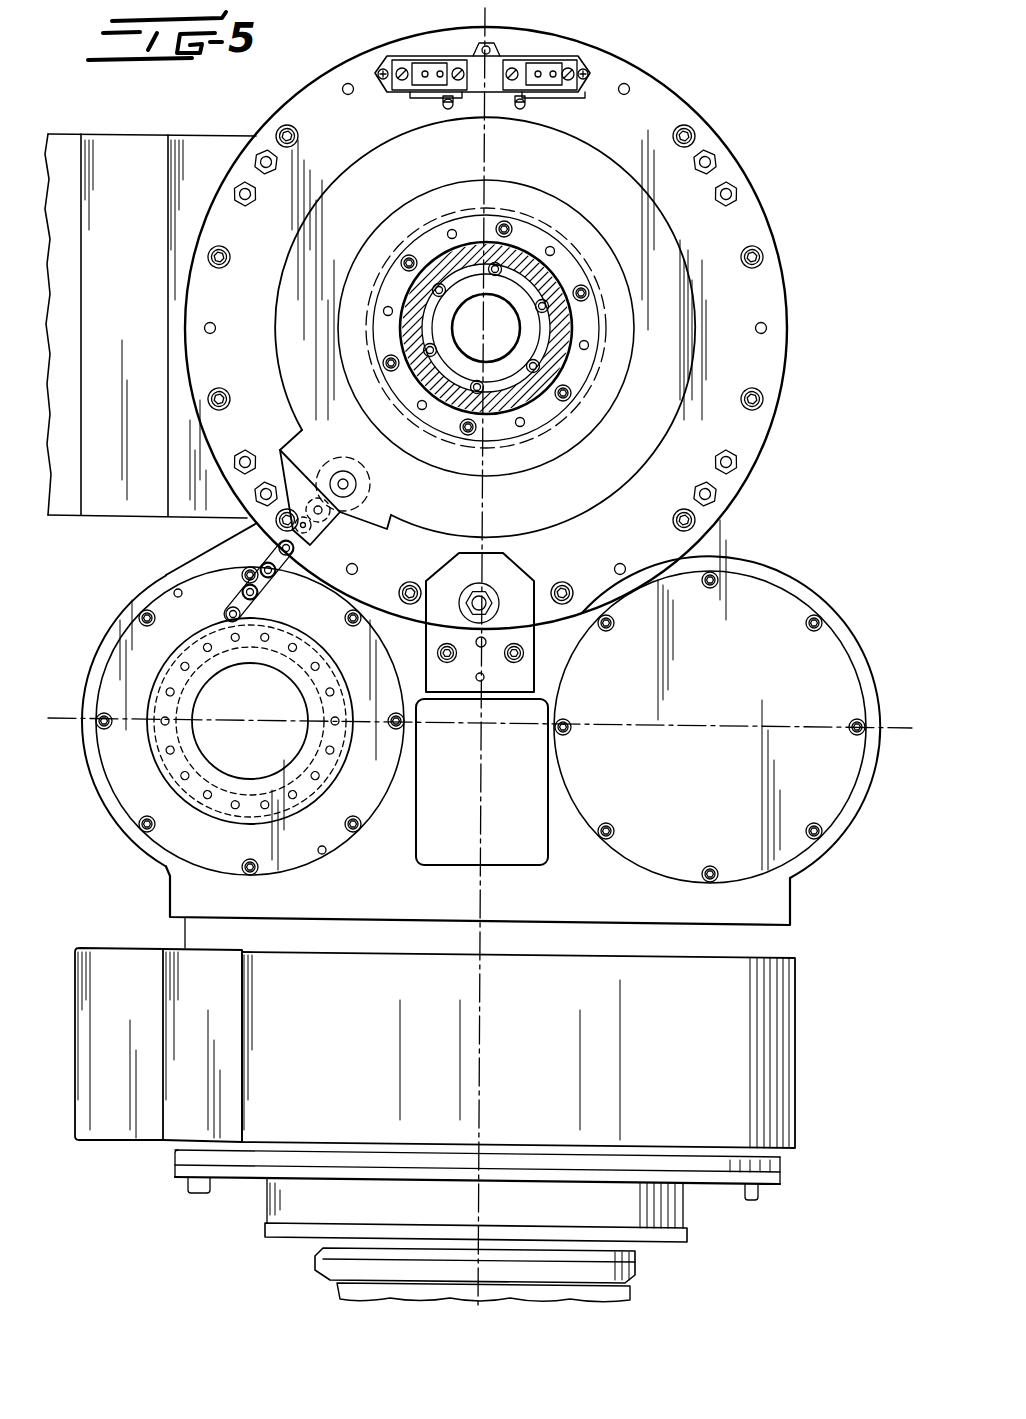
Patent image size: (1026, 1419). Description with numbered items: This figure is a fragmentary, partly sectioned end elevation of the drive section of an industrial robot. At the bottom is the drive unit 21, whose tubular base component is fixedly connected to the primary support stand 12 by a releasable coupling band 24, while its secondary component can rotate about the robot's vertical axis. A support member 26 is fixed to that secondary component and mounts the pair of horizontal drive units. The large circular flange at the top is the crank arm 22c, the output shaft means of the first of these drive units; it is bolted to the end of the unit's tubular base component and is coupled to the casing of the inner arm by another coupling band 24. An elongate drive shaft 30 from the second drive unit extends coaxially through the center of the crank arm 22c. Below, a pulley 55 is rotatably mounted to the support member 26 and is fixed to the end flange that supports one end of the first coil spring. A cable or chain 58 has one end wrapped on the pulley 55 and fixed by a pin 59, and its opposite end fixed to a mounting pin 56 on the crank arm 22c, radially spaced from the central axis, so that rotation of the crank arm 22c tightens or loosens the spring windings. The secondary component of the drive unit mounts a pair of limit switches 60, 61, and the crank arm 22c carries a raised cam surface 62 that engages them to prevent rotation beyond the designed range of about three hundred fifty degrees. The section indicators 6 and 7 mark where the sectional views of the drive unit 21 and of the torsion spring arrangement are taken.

The section line 6- 6 is at (485, 8).
The section line 7- 7 is at (48, 718).
The primary support stand 12 is at (340, 1292).
The drive unit 21 is at (812, 1051).
The crank arm 22c is at (537, 242).
The coupling band 24 is at (320, 1258).
The support member 26 is at (466, 902).
The drive shaft 30 is at (559, 345).
The pulley 55 is at (240, 823).
The mounting pin 56 is at (356, 482).
The chain 58 is at (243, 598).
The pin 59 is at (270, 620).
The limit switch 60 is at (428, 62).
The limit switch 61 is at (541, 62).
The raised cam surface 62 is at (296, 448).